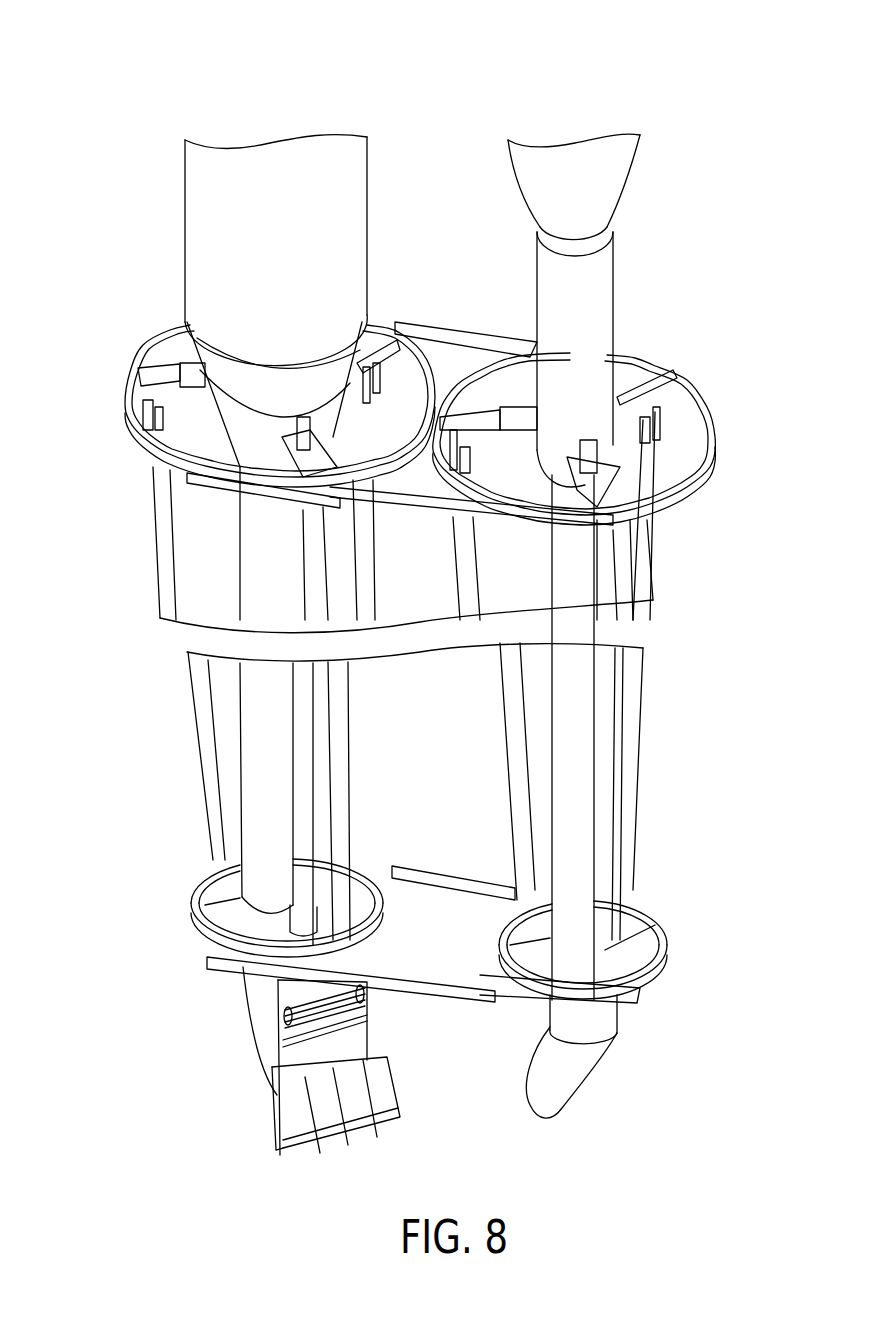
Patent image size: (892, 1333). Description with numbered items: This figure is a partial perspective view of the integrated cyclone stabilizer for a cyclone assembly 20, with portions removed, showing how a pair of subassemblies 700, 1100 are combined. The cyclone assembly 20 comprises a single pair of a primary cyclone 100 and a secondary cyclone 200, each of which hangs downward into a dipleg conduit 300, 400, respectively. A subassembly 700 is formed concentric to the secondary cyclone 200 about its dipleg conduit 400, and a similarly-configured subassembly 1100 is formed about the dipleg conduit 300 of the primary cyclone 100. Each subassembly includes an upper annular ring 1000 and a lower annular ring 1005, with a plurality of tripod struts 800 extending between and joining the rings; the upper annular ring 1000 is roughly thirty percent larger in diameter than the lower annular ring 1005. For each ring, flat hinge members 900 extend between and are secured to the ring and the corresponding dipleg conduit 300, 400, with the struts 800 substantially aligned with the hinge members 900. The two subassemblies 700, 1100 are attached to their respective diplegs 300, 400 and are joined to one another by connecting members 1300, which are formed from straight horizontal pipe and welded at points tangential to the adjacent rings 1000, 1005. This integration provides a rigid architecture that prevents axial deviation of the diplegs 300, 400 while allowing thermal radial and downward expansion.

The cyclone assembly 20 is at (189, 71).
The primary cyclone 100 is at (198, 228).
The secondary cyclone 200 is at (602, 190).
The dipleg conduit 300 is at (260, 605).
The dipleg conduit 400 is at (580, 563).
The subassembly 700 is at (728, 382).
The struts 800 is at (190, 692).
The hinge members 900 is at (377, 340).
The upper annular ring 1000 is at (147, 447).
The lower annular ring 1005 is at (203, 937).
The subassembly 1100 is at (125, 373).
The connecting members 1300 is at (448, 885).